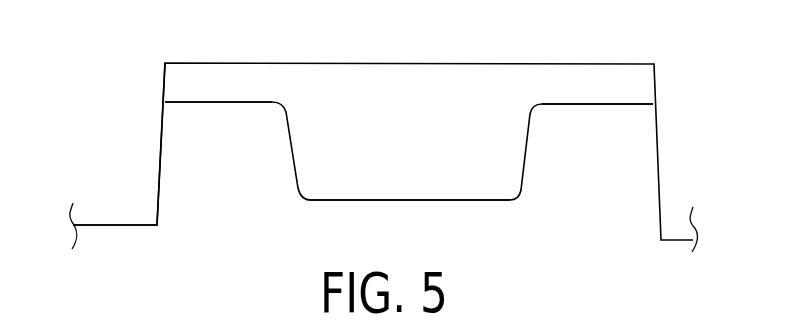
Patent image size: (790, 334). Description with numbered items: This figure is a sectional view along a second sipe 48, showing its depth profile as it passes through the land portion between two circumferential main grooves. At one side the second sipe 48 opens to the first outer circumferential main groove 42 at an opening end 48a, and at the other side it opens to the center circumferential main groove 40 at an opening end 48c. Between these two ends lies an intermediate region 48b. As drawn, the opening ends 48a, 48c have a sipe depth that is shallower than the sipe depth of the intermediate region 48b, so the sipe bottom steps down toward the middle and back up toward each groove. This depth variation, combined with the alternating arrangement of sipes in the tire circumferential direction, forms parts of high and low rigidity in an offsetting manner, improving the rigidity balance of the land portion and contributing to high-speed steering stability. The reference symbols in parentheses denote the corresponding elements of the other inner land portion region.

The center circumferential main groove 40 is at (682, 127).
The first outer circumferential main groove 42 is at (123, 130).
The second sipe 48 is at (462, 104).
The opening end of second sipe 48a is at (207, 101).
The intermediate region of second sipe 48b is at (353, 200).
The opening end of second sipe 48c is at (590, 103).